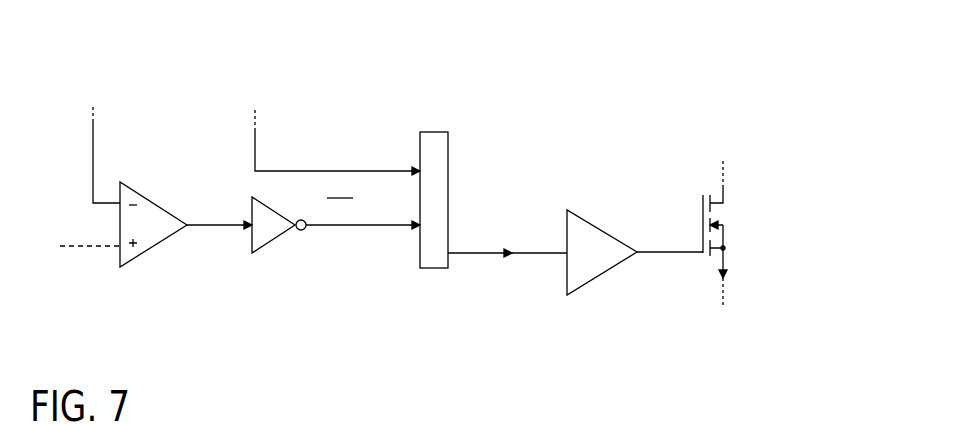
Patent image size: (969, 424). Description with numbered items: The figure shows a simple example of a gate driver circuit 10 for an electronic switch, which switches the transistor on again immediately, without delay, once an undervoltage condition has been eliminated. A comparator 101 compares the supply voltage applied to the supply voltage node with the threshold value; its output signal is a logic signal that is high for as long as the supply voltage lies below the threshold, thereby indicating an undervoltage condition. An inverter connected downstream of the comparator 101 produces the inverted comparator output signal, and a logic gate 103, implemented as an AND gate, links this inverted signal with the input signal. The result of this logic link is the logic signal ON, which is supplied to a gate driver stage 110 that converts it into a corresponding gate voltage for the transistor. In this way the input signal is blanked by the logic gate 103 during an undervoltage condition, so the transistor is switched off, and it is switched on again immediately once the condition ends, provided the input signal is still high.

The gate driver circuit 10 is at (656, 71).
The comparator 101 is at (155, 237).
The logic gate 103 is at (430, 262).
The gate driver stage 110 is at (588, 237).